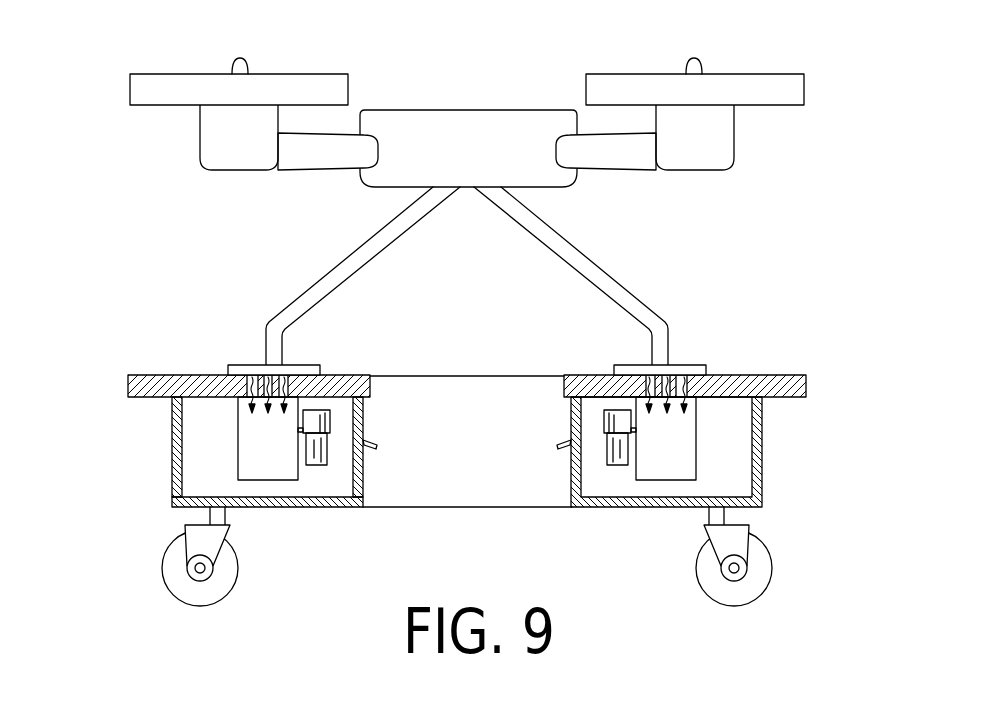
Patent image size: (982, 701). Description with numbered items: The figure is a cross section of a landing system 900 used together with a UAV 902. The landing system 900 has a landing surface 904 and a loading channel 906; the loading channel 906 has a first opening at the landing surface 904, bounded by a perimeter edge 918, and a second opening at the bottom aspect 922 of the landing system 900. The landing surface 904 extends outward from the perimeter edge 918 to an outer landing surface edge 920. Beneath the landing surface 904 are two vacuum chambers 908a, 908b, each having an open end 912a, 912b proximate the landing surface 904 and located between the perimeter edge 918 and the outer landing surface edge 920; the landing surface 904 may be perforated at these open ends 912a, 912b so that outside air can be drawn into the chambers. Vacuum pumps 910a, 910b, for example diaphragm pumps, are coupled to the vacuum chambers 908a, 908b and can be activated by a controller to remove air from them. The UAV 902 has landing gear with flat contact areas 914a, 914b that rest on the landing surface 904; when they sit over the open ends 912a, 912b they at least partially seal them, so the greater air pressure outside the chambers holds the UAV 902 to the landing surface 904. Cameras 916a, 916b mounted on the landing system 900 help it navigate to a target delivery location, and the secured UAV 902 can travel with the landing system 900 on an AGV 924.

The landing system 900 is at (438, 454).
The UAV 902 is at (191, 59).
The landing surface 904 is at (345, 374).
The loading channel 906 is at (462, 398).
The vacuum chamber 908a is at (237, 423).
The vacuum chamber 908b is at (697, 418).
The vacuum pump 910a is at (317, 465).
The vacuum pump 910b is at (618, 465).
The open end 912a is at (247, 362).
The open end 912b is at (688, 362).
The contact area 914a is at (300, 362).
The contact area 914b is at (635, 363).
The camera 916a is at (376, 448).
The camera 916b is at (560, 448).
The perimeter edge 918 is at (372, 386).
The outer landing surface edge 920 is at (481, 440).
The bottom aspect 922 is at (330, 509).
The AGV 924 is at (744, 477).